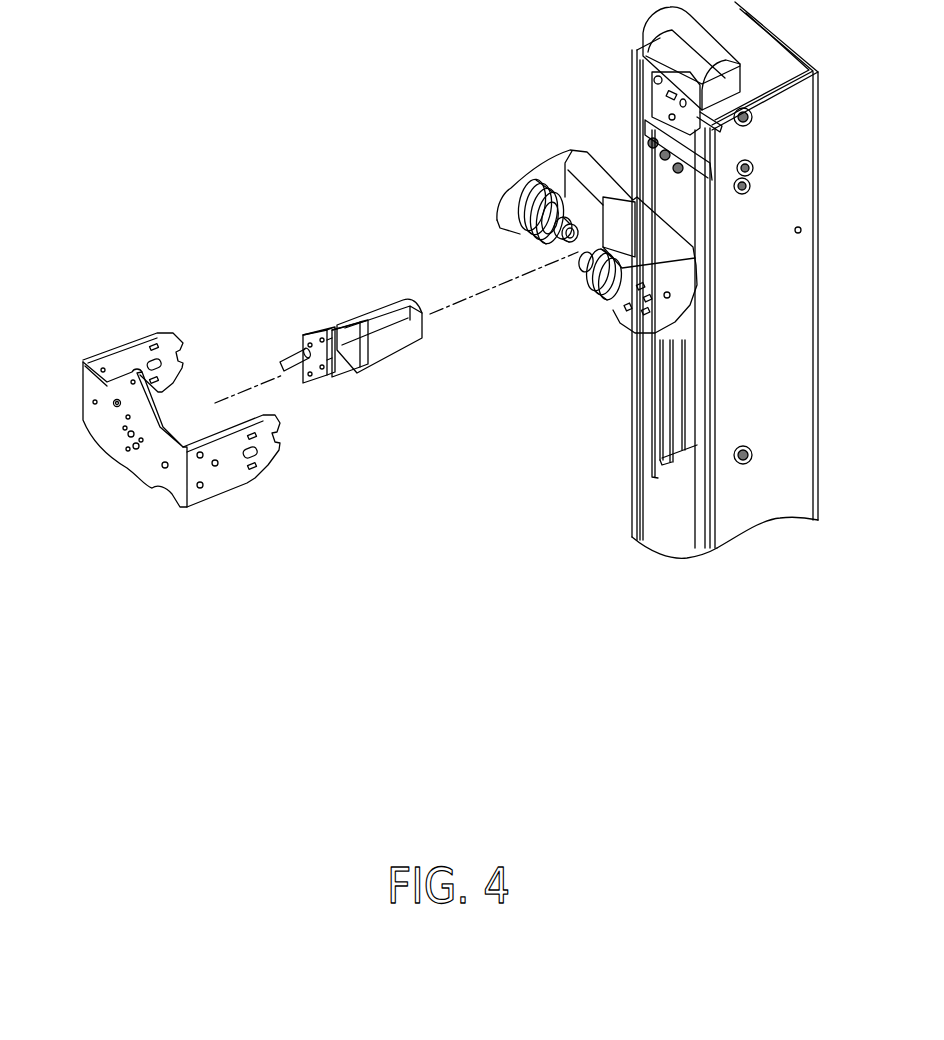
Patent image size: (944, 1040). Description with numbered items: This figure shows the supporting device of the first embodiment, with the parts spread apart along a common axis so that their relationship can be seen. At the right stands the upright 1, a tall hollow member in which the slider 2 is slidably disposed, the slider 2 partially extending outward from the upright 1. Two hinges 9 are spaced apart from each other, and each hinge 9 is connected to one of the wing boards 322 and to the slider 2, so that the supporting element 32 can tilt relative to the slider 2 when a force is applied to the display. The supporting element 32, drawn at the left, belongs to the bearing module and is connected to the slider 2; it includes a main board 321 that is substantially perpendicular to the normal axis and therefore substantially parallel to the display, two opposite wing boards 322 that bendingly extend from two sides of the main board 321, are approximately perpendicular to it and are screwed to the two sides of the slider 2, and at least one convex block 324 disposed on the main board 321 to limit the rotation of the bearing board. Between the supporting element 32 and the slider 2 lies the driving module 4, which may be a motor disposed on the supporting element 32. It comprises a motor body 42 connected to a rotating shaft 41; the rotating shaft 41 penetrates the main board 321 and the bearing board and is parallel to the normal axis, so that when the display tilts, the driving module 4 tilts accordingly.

The upright 1 is at (807, 268).
The slider 2 is at (590, 150).
The hinge 9 is at (533, 180).
The supporting element 32 is at (182, 283).
The main board 321 is at (123, 480).
The wing board 322 is at (118, 345).
The convex block 324 is at (97, 404).
The driving module 4 is at (313, 255).
The rotating shaft 41 is at (295, 357).
The motor body 42 is at (375, 313).